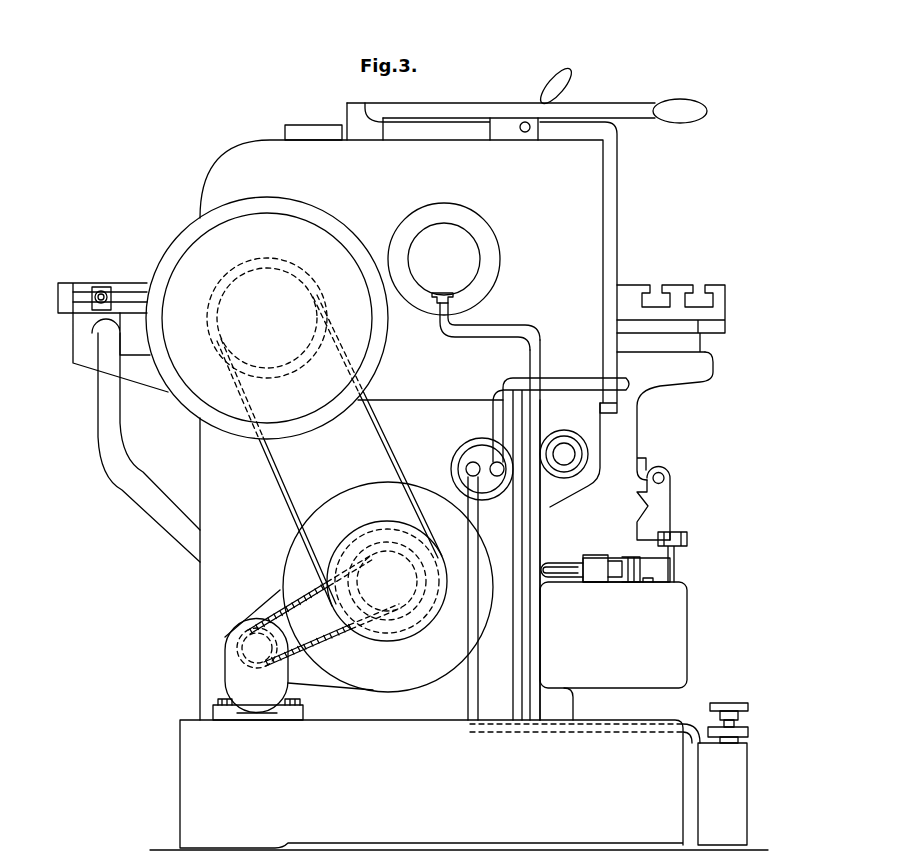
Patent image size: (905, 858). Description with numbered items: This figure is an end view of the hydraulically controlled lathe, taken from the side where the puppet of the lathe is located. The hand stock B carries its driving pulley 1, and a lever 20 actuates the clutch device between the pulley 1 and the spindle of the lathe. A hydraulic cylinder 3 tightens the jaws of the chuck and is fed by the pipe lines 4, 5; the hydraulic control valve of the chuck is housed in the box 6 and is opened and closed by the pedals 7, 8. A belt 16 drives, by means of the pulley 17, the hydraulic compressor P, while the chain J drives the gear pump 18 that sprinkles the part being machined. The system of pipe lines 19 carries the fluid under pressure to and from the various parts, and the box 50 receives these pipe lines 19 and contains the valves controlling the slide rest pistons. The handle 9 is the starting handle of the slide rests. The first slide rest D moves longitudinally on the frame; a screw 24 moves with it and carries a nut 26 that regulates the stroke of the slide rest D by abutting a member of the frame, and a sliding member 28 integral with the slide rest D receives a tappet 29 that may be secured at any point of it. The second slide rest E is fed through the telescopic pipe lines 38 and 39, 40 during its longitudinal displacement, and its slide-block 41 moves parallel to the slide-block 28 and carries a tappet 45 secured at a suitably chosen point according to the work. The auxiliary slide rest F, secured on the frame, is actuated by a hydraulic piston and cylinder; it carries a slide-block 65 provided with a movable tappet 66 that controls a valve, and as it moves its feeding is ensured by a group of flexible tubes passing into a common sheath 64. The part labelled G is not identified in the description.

The driving pulley 1 is at (178, 248).
The hydraulic cylinder 3 is at (444, 259).
The pipe line 4 is at (528, 358).
The pipe line 5 is at (497, 330).
The box 6 is at (722, 794).
The pedal 7 is at (743, 733).
The pedal 8 is at (725, 705).
The starting handle 9 is at (573, 72).
The belt 16 is at (275, 479).
The pulley 17 is at (360, 533).
The gear pump 18 is at (293, 655).
The system of pipe lines 19 is at (516, 683).
The lever 20 is at (680, 118).
The screw 24 is at (565, 460).
The nut 26 is at (567, 437).
The sliding member 28 is at (587, 555).
The tappet 29 is at (620, 560).
The telescopic pipe line 38 is at (582, 584).
The telescopic pipe line 39 is at (561, 580).
The telescopic pipe line 40 is at (547, 578).
The slide-block 41 is at (653, 503).
The tappet 45 is at (670, 563).
The box 50 is at (613, 649).
The common sheath 64 is at (97, 432).
The slide-block 65 is at (135, 298).
The movable tappet 66 is at (90, 312).
The hand stock B is at (408, 411).
The first slide rest D is at (675, 416).
The second slide rest E is at (673, 295).
The auxiliary slide rest F is at (118, 288).
The base G is at (459, 785).
The chain J is at (317, 650).
The hydraulic compressor P is at (388, 587).